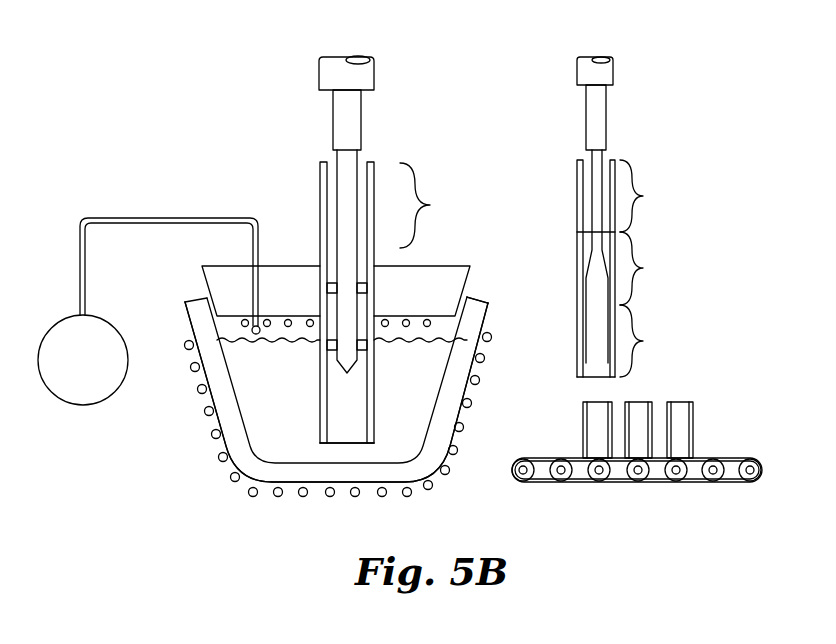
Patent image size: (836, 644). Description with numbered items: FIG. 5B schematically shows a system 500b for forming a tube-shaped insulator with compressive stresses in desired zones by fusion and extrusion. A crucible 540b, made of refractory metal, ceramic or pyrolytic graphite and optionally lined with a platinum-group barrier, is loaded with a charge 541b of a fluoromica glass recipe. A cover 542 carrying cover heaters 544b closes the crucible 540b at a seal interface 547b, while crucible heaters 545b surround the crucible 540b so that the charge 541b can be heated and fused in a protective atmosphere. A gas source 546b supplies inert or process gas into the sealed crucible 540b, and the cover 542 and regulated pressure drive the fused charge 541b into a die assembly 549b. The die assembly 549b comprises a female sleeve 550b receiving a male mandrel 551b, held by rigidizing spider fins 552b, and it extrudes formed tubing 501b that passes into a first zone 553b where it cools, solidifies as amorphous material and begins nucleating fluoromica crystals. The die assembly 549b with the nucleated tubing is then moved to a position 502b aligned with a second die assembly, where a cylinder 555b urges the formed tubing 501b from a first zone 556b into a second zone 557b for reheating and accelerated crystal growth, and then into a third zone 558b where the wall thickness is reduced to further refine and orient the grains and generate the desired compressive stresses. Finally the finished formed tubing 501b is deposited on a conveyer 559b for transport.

The system 500b is at (187, 152).
The formed tubing 501b is at (333, 158).
The position 502b is at (743, 95).
The crucible 540b is at (237, 462).
The charge 541b is at (253, 405).
The cover 542 is at (447, 275).
The cover heaters 544b is at (429, 321).
The crucible heaters 545b is at (458, 452).
The gas source 546b is at (108, 312).
The seal interface 547b is at (482, 305).
The die assembly 549b is at (317, 220).
The female sleeve 550b is at (376, 440).
The male mandrel 551b is at (348, 183).
The rigidizing spider fins 552b is at (363, 347).
The first zone 553b is at (430, 205).
The cylinder 555b is at (612, 70).
The first zone 556b is at (643, 196).
The second zone 557b is at (643, 268).
The third zone 558b is at (643, 341).
The conveyer 559b is at (687, 482).